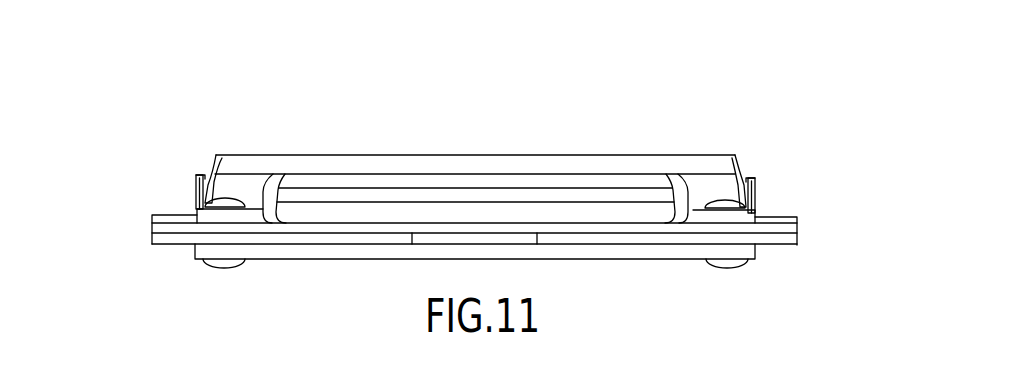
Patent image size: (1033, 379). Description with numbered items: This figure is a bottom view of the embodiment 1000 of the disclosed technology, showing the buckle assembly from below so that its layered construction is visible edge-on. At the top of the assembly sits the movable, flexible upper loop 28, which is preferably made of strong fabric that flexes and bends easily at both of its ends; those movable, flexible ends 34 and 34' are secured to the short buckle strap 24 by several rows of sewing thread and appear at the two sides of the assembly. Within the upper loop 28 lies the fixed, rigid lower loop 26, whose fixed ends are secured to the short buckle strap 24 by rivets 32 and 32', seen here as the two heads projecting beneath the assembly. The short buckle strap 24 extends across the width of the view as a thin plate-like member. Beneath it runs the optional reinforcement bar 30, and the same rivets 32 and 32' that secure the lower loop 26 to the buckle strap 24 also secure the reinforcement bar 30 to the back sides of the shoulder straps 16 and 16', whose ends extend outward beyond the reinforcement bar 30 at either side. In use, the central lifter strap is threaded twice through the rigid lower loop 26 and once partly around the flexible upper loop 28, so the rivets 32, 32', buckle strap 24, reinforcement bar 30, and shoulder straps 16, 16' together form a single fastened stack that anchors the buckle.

The embodiment 1000 is at (280, 115).
The upper loop 28 is at (232, 157).
The lower loop 26 is at (648, 182).
The flexible end 34 is at (136, 179).
The flexible end 34' is at (796, 186).
The short buckle strap 24 is at (167, 228).
The shoulder strap 16 is at (163, 275).
The shoulder strap 16' is at (782, 280).
The reinforcement bar 30 is at (353, 252).
The rivet 32 is at (245, 302).
The rivet 32' is at (695, 299).